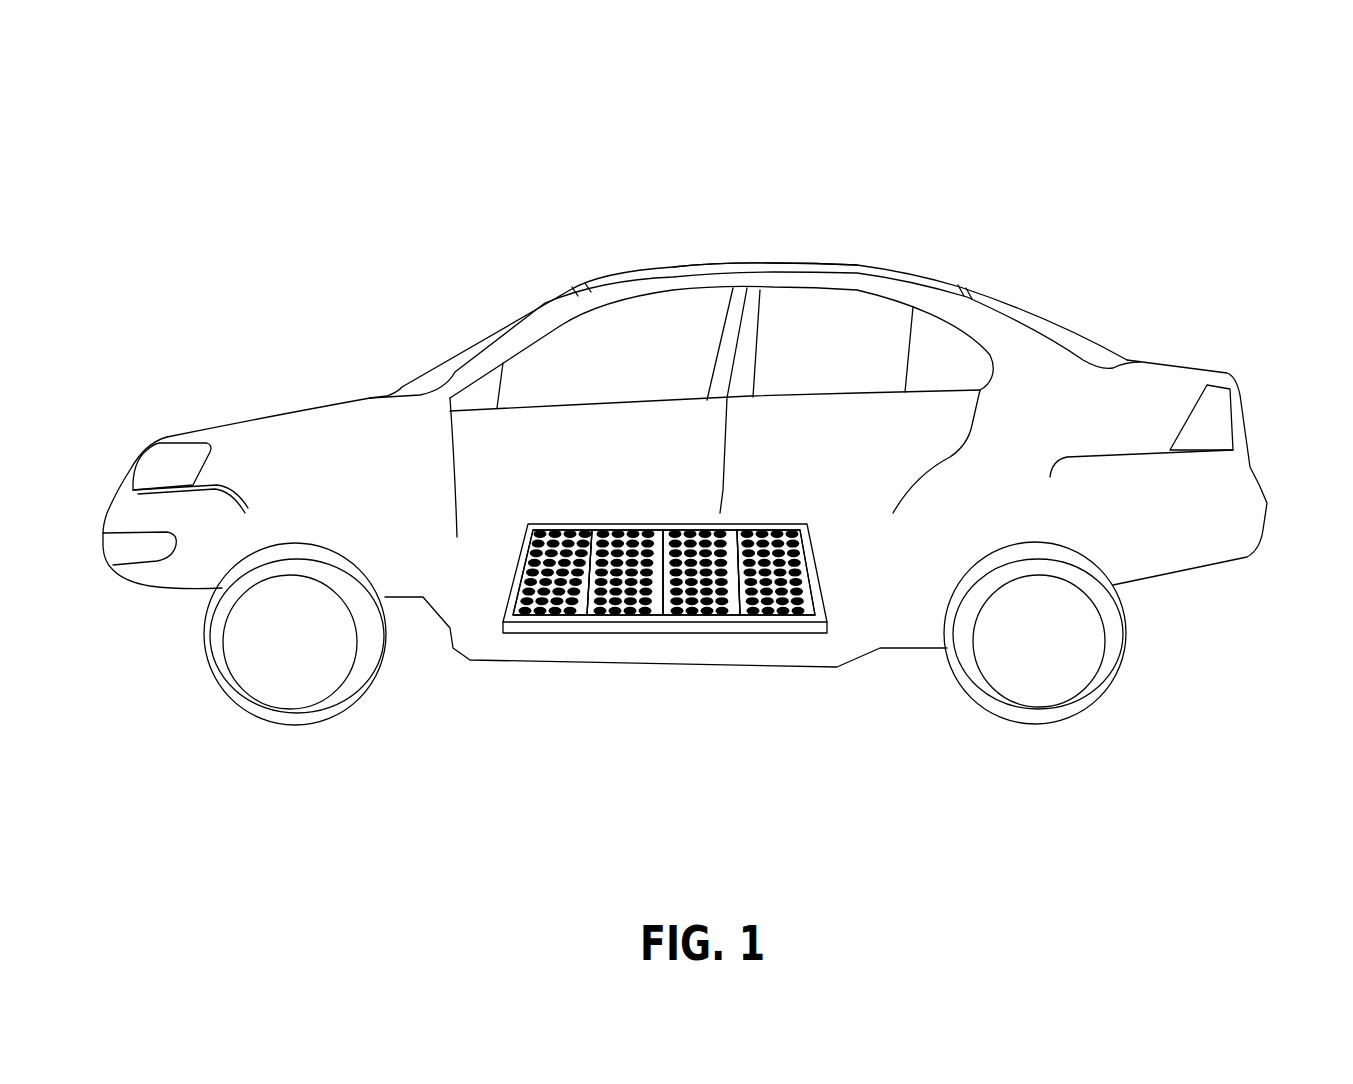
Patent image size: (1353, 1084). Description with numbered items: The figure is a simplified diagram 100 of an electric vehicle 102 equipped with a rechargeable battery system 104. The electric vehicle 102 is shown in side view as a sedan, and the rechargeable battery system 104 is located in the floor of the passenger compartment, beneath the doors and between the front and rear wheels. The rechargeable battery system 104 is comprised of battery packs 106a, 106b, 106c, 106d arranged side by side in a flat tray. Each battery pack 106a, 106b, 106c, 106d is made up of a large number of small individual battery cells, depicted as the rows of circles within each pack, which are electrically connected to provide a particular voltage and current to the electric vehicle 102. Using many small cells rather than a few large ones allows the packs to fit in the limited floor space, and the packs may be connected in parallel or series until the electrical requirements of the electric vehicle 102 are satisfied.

The simplified diagram 100 is at (1258, 123).
The electric vehicle 102 is at (748, 264).
The rechargeable battery system 104 is at (670, 637).
The battery pack 106a is at (537, 530).
The battery pack 106b is at (620, 530).
The battery pack 106c is at (720, 530).
The battery pack 106d is at (803, 530).